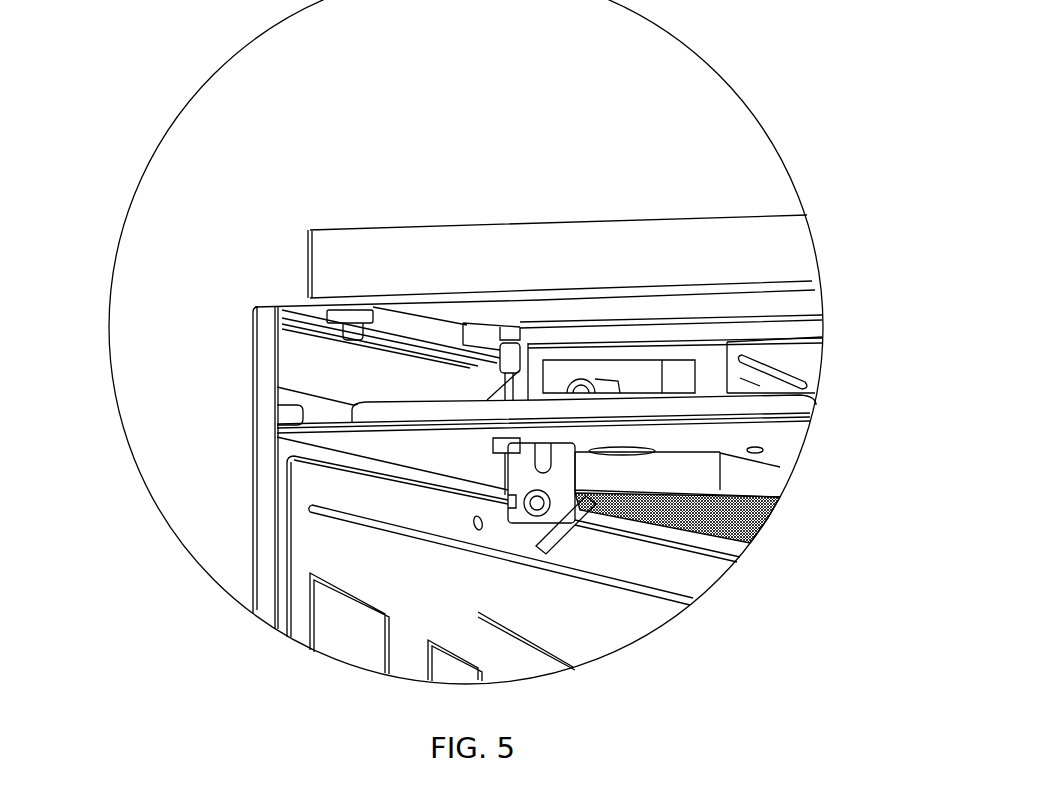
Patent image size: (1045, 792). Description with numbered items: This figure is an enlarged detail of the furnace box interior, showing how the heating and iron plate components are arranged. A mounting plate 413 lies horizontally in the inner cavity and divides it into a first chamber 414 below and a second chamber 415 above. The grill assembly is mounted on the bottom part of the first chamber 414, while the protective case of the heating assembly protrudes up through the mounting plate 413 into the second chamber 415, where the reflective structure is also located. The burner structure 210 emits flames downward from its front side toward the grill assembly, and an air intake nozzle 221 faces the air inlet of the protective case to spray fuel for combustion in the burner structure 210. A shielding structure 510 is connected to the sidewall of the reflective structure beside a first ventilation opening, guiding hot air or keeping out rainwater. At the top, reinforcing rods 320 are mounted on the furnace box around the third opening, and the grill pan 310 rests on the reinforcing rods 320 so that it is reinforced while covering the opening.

The grill pan 310 is at (332, 230).
The reinforcing rods 320 is at (480, 328).
The second chamber 415 is at (302, 353).
The mounting plate 413 is at (287, 425).
The air intake nozzle 221 is at (550, 398).
The first chamber 414 is at (310, 555).
The shielding structure 510 is at (778, 370).
The burner structure 210 is at (762, 483).